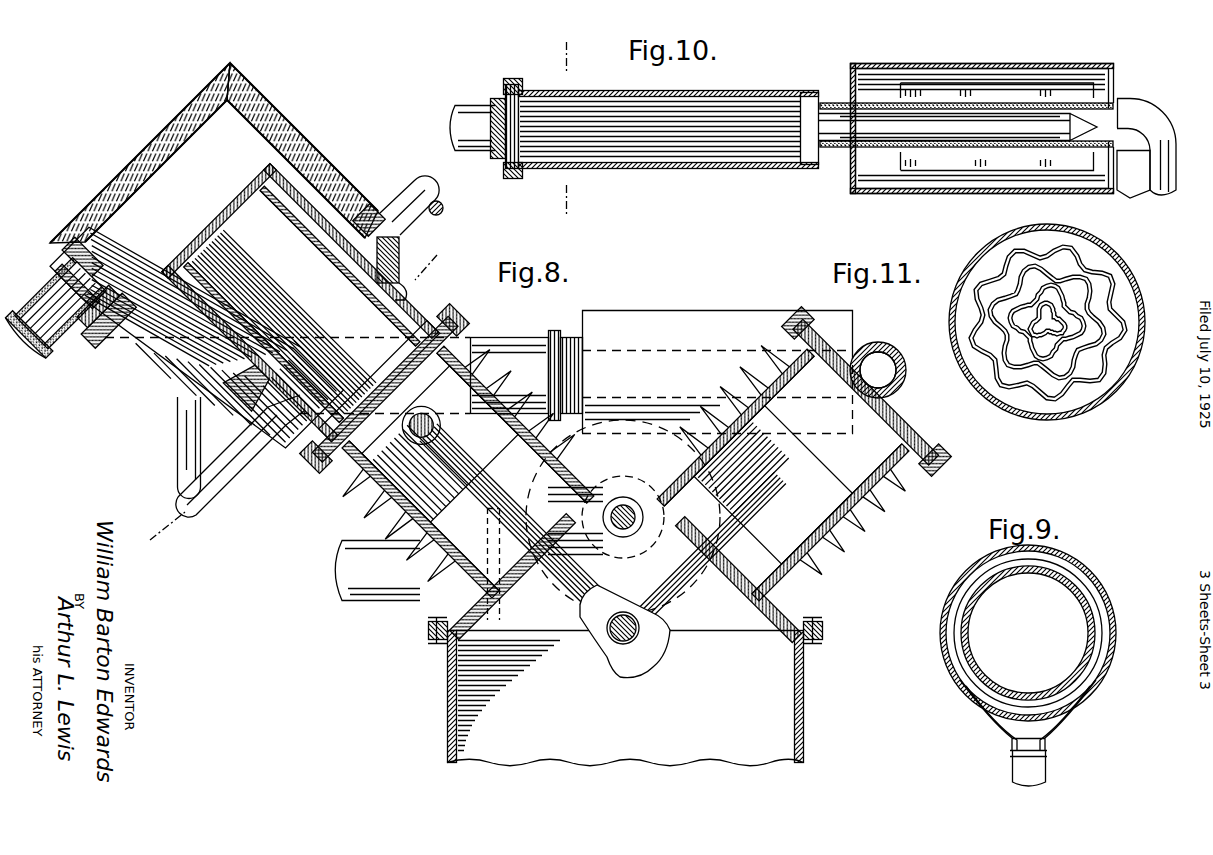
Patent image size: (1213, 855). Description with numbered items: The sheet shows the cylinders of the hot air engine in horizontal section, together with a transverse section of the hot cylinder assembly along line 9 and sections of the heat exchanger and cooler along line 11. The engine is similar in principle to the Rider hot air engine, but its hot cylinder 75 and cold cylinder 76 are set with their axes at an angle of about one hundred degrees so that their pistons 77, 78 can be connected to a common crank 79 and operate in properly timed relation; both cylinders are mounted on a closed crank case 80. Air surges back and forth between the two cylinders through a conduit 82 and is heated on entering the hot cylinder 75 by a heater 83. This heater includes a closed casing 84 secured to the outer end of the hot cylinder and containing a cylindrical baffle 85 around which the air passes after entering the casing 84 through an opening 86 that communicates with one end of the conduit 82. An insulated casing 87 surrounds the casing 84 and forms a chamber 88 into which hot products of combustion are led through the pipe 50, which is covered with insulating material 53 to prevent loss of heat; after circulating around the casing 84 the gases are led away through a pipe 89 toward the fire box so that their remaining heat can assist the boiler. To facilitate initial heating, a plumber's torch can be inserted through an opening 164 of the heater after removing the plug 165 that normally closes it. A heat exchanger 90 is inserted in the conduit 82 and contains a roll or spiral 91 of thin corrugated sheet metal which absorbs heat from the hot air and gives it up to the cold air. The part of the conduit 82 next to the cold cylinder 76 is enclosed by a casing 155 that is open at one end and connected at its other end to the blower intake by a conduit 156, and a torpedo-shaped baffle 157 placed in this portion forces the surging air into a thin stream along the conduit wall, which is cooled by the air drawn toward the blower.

In FIG. 8, the section line 9- 9 is at (291, 402).
In FIG. 10, the burner 11 is at (567, 128).
In FIG. 8, the pipe 50 is at (40, 352).
In FIG. 8, the insulating material 53 is at (75, 338).
In FIG. 8, the hot cylinder 75 is at (332, 495).
In FIG. 8, the cold cylinder 76 is at (887, 487).
In FIG. 8, the piston 77 is at (455, 405).
In FIG. 8, the piston 78 is at (773, 485).
In FIG. 8, the common crank 79 is at (602, 627).
In FIG. 8, the closed crank case 80 is at (803, 700).
In FIG. 8, the conduit 82 is at (177, 445).
In FIG. 10, the conduit 82 is at (462, 115).
In FIG. 9, the conduit 82 is at (1040, 766).
In FIG. 8, the heater 83 is at (295, 110).
In FIG. 8, the closed casing 84 is at (300, 197).
In FIG. 9, the closed casing 84 is at (1098, 620).
In FIG. 8, the cylindrical baffle 85 is at (210, 303).
In FIG. 9, the cylindrical baffle 85 is at (1065, 575).
In FIG. 8, the opening 86 is at (285, 430).
In FIG. 9, the opening 86 is at (1020, 725).
In FIG. 8, the insulated casing 87 is at (137, 153).
In FIG. 8, the chamber 88 is at (184, 144).
In FIG. 8, the pipe 89 is at (430, 217).
In FIG. 8, the heat exchanger 90 is at (493, 350).
In FIG. 10, the heat exchanger 90 is at (700, 165).
In FIG. 11, the heat exchanger 90 is at (1090, 252).
In FIG. 10, the roll or spiral of thin corrugated sheet metal 91 is at (770, 100).
In FIG. 11, the roll or spiral of thin corrugated sheet metal 91 is at (1068, 380).
In FIG. 8, the casing 155 is at (690, 315).
In FIG. 10, the casing 155 is at (1080, 62).
In FIG. 8, the conduit 156 is at (580, 447).
In FIG. 10, the torpedo-shaped baffle 157 is at (950, 118).
In FIG. 8, the opening 164 is at (128, 338).
In FIG. 8, the plug 165 is at (157, 365).